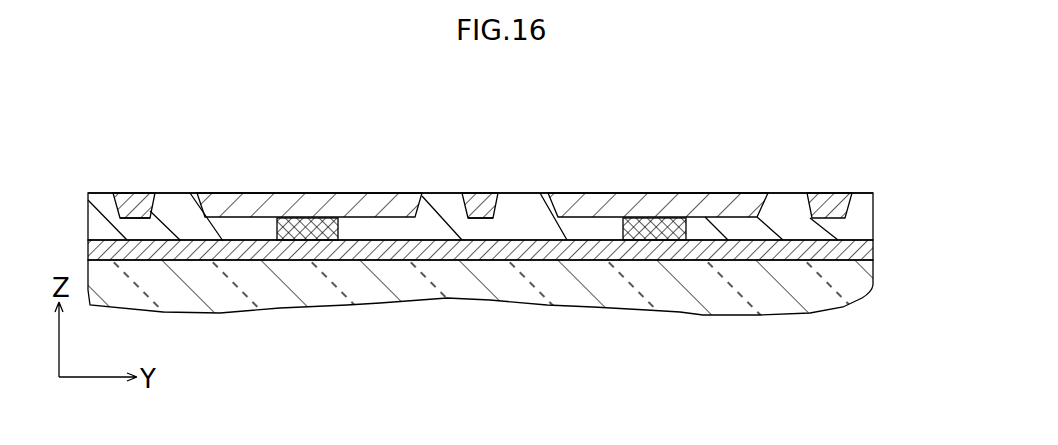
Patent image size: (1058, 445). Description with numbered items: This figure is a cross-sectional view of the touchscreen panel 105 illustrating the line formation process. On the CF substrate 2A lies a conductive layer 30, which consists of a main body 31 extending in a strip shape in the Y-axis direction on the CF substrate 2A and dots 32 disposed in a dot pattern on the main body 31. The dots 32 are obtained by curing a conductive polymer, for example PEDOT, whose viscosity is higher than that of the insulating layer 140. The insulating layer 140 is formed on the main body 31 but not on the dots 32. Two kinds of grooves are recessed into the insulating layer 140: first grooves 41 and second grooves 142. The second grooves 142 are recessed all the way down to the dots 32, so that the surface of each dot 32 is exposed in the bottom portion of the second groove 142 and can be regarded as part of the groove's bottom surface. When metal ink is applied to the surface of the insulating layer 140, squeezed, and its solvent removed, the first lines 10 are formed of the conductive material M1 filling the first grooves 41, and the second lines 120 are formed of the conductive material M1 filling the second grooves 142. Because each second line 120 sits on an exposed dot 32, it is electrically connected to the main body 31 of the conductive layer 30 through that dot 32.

The touchscreen panel 105 is at (829, 104).
The CF substrate 2A is at (867, 288).
The insulating layer 140 is at (860, 217).
The conductive layer 30 is at (521, 304).
The main body 31 is at (872, 250).
The dots 32 is at (341, 224).
The conductive material M1 is at (511, 171).
The first lines 10 is at (148, 193).
The second lines 120 is at (310, 193).
The first grooves 41 is at (132, 218).
The second grooves 142 is at (224, 241).